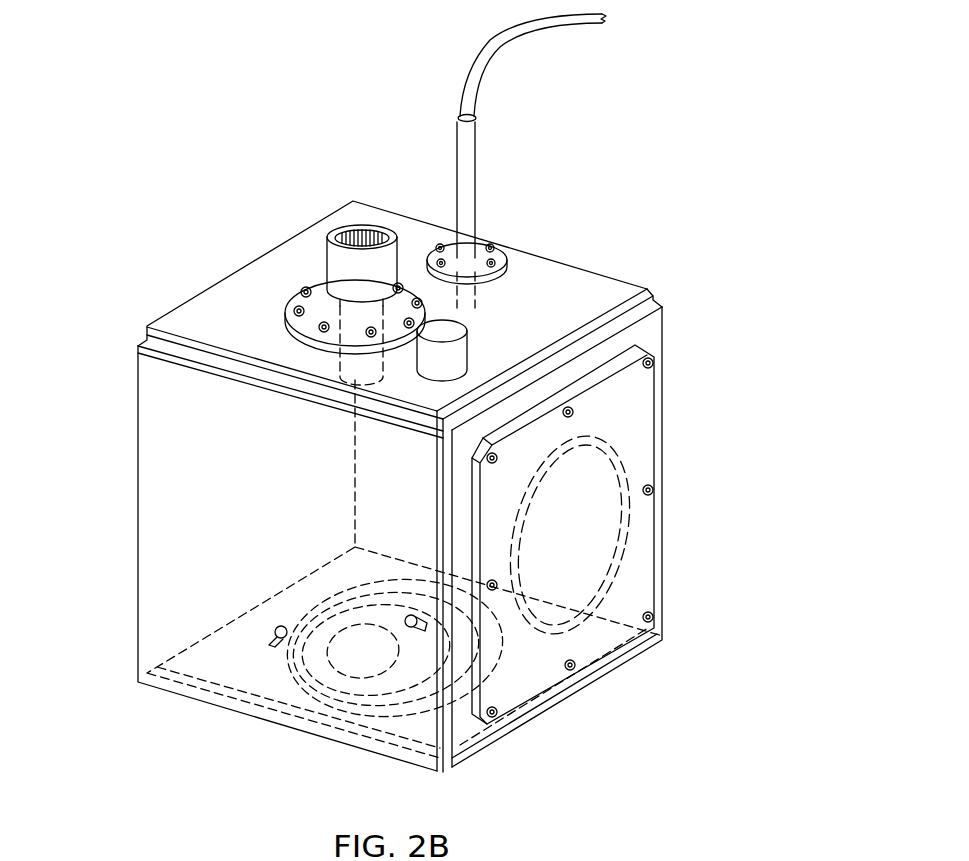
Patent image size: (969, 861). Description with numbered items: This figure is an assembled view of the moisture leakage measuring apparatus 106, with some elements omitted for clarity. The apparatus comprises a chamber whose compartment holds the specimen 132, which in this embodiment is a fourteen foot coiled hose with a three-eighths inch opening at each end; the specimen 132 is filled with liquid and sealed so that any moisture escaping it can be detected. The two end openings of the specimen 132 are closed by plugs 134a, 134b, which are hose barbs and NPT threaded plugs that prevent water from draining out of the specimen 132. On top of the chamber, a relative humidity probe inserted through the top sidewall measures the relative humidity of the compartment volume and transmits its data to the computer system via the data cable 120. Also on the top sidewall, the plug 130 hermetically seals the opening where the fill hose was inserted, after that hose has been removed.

The moisture leakage measuring apparatus 106 is at (700, 147).
The data cable 120 is at (482, 82).
The plug 130 is at (458, 333).
The specimen 132 is at (287, 667).
The plug 134a is at (275, 630).
The plug 134b is at (415, 632).